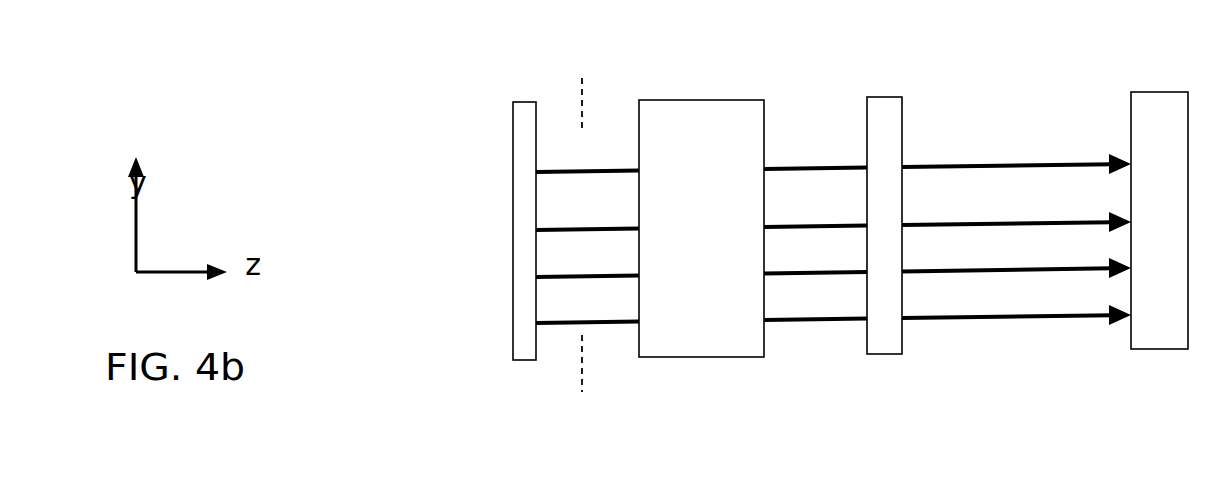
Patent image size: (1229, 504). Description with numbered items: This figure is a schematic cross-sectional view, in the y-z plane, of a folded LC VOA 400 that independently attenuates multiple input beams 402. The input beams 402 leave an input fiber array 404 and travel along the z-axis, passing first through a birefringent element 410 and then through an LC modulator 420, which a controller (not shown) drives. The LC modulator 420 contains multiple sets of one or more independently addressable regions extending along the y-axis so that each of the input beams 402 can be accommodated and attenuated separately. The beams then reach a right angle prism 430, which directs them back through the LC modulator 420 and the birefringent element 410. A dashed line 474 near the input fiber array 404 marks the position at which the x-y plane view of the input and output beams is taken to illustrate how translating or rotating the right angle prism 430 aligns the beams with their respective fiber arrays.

The folded LC VOA 400 is at (434, 174).
The input beams 402 is at (577, 262).
The input fiber array 404 is at (525, 102).
The line 474 is at (590, 211).
The birefringent element 410 is at (683, 100).
The LC modulator 420 is at (890, 97).
The right angle prism 430 is at (1175, 104).